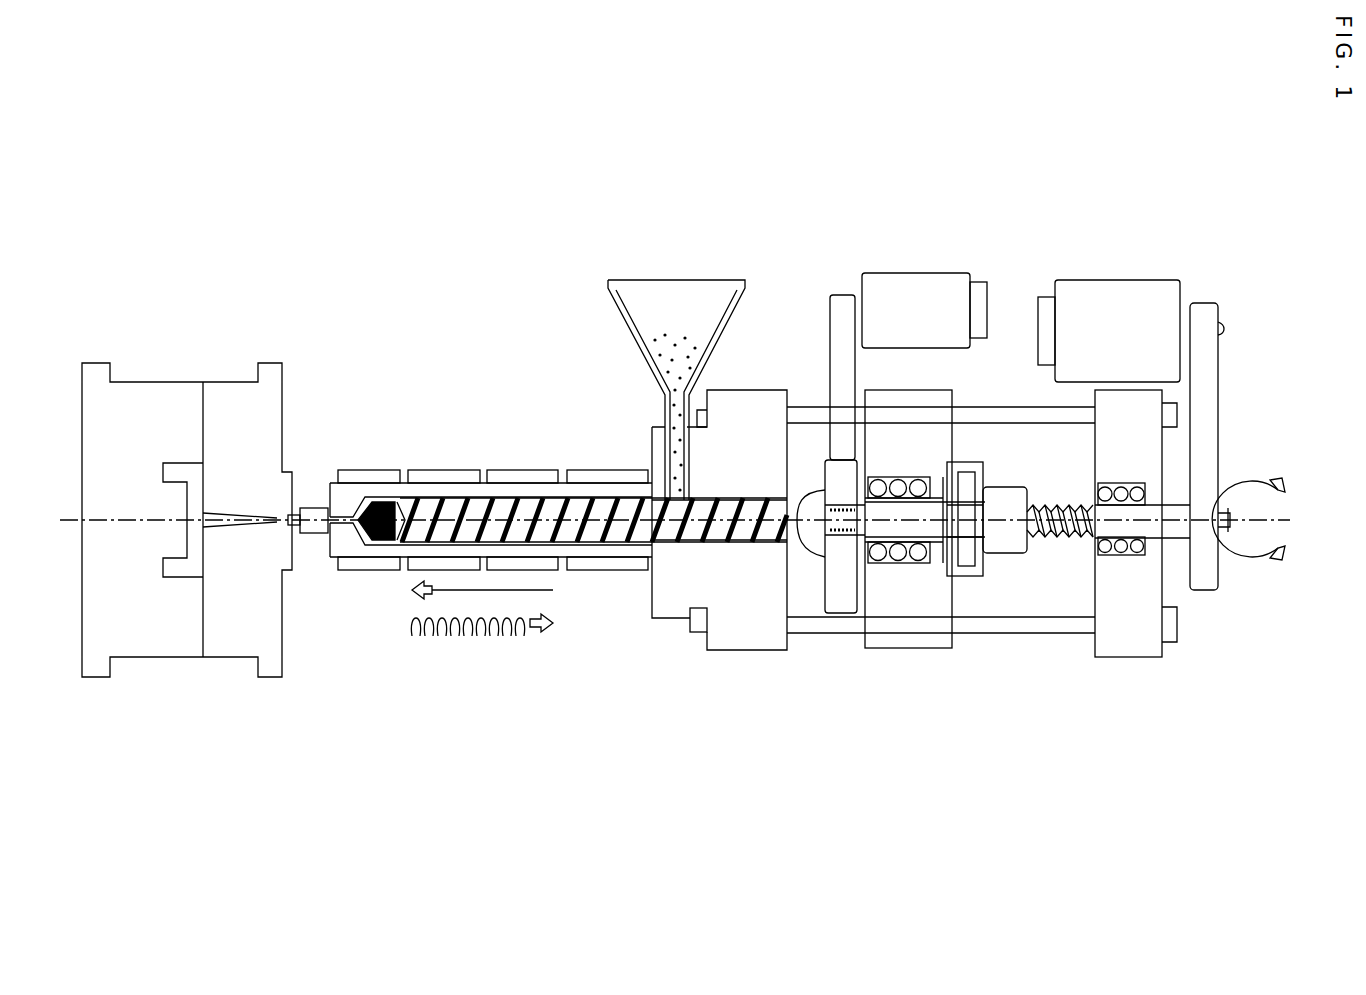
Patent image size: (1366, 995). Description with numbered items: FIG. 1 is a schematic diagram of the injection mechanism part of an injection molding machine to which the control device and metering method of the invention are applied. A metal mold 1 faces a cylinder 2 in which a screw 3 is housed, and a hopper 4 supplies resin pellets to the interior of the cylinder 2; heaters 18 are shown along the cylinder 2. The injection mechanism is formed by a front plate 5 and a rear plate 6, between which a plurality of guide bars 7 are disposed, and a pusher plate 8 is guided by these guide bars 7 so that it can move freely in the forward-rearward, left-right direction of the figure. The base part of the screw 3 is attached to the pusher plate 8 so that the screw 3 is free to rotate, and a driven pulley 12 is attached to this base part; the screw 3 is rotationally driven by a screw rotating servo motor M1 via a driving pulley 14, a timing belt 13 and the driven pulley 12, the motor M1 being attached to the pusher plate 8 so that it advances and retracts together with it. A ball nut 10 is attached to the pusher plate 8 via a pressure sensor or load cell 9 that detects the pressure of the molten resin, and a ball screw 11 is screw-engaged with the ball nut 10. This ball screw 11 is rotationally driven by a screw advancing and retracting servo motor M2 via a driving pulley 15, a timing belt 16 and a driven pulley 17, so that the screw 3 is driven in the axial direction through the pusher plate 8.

The metal mold 1 is at (178, 382).
The cylinder 2 is at (470, 482).
The screw 3 is at (593, 542).
The hopper 4 is at (627, 320).
The front plate 5 is at (743, 632).
The rear plate 6 is at (1122, 648).
The guide bars 7 is at (970, 410).
The pusher plate 8 is at (883, 642).
The pressure sensor (load cell) 9 is at (945, 576).
The ball nut 10 is at (1000, 555).
The ball screw 11 is at (1045, 545).
The driven pulley 12 is at (822, 600).
The timing belt 13 is at (826, 373).
The driving pulley 14 is at (828, 303).
The driving pulley 15 is at (1220, 308).
The timing belt 16 is at (1215, 388).
The driven pulley 17 is at (1218, 465).
The heater 18 is at (421, 468).
The screw rotating servo motor M1 is at (917, 272).
The screw advancing and retracting servo motor M2 is at (1102, 278).